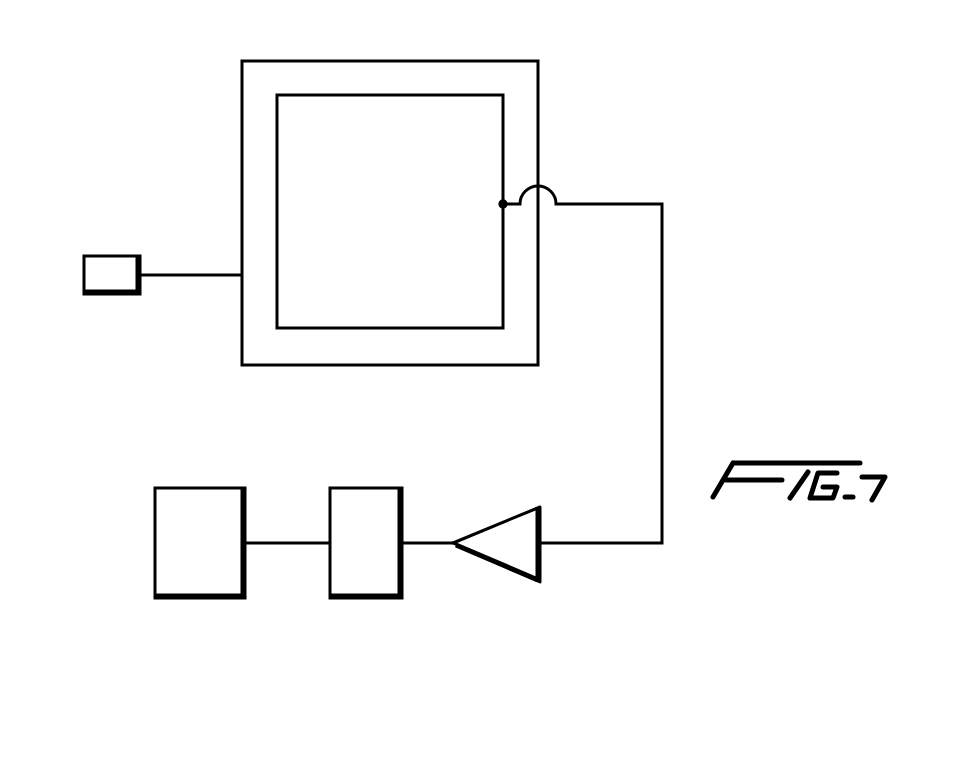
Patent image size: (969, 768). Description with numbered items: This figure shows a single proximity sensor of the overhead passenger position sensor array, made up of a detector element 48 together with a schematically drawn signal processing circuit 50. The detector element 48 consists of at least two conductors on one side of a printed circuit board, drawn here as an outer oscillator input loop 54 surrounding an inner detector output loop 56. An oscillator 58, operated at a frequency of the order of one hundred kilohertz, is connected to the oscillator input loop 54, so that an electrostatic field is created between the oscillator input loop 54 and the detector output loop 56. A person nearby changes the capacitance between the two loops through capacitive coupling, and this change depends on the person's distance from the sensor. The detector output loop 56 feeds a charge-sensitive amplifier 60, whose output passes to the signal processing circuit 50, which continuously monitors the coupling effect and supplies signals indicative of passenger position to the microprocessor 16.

The microprocessor 16 is at (168, 558).
The detector element 48 is at (468, 160).
The signal processing circuit 50 is at (362, 578).
The oscillator input loop 54 is at (243, 201).
The detector output loop 56 is at (507, 259).
The oscillator 58 is at (123, 297).
The charge-sensitive amplifier 60 is at (543, 567).